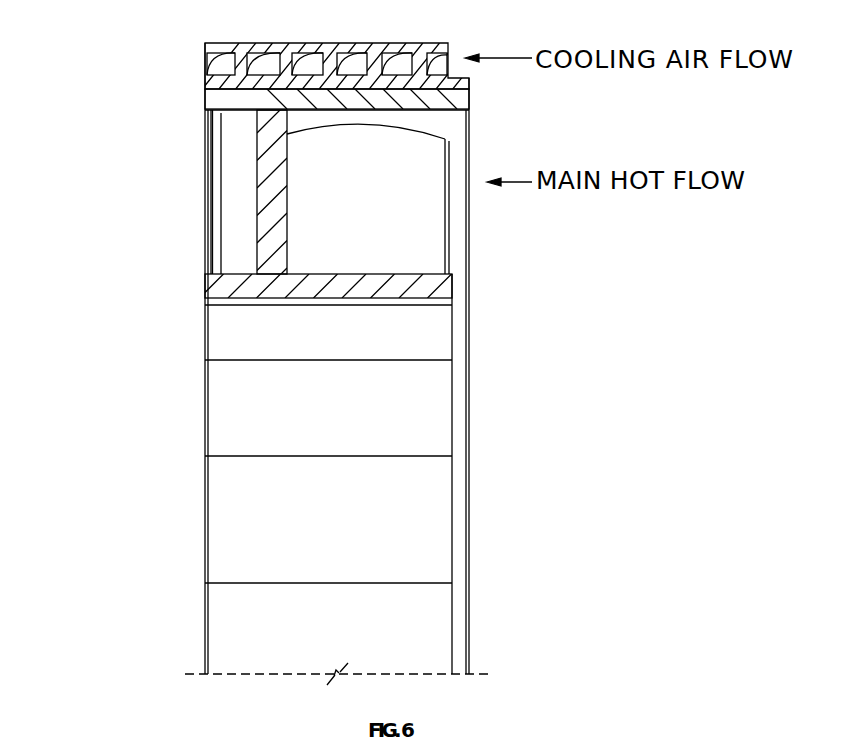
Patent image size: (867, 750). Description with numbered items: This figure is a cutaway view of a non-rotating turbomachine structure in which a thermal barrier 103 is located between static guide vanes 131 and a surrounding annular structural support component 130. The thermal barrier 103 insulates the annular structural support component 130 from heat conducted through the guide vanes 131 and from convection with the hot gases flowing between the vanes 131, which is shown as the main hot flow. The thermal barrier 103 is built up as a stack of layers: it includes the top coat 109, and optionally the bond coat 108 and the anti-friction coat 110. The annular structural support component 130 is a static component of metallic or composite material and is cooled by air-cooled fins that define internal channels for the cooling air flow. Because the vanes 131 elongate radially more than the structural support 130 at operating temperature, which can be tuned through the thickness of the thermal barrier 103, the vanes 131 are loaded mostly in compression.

The thermal barrier 103 is at (186, 110).
The bond coat 108 is at (200, 82).
The top coat 109 is at (213, 99).
The anti-friction coat 110 is at (217, 113).
The annular structural support component 130 is at (227, 65).
The guide vanes 131 is at (235, 192).